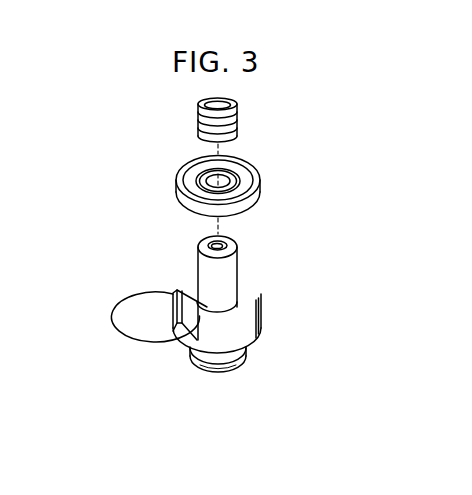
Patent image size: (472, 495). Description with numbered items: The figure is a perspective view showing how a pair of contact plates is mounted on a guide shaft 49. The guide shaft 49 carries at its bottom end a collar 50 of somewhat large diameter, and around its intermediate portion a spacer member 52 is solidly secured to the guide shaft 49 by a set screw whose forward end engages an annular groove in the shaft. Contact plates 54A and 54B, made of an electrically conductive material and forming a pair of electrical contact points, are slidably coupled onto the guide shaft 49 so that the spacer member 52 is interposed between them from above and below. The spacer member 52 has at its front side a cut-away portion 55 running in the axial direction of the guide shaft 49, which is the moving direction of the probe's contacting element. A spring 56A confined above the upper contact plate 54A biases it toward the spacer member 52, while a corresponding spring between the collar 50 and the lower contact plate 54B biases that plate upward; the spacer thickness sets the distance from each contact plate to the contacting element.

The guide shaft 49 is at (238, 257).
The collar 50 is at (232, 375).
The spacer member 52 is at (260, 308).
The upper contact plate 54A is at (261, 196).
The lower contact plate 54B is at (258, 345).
The cut-away portion 55 is at (188, 308).
The spring 56A is at (239, 125).